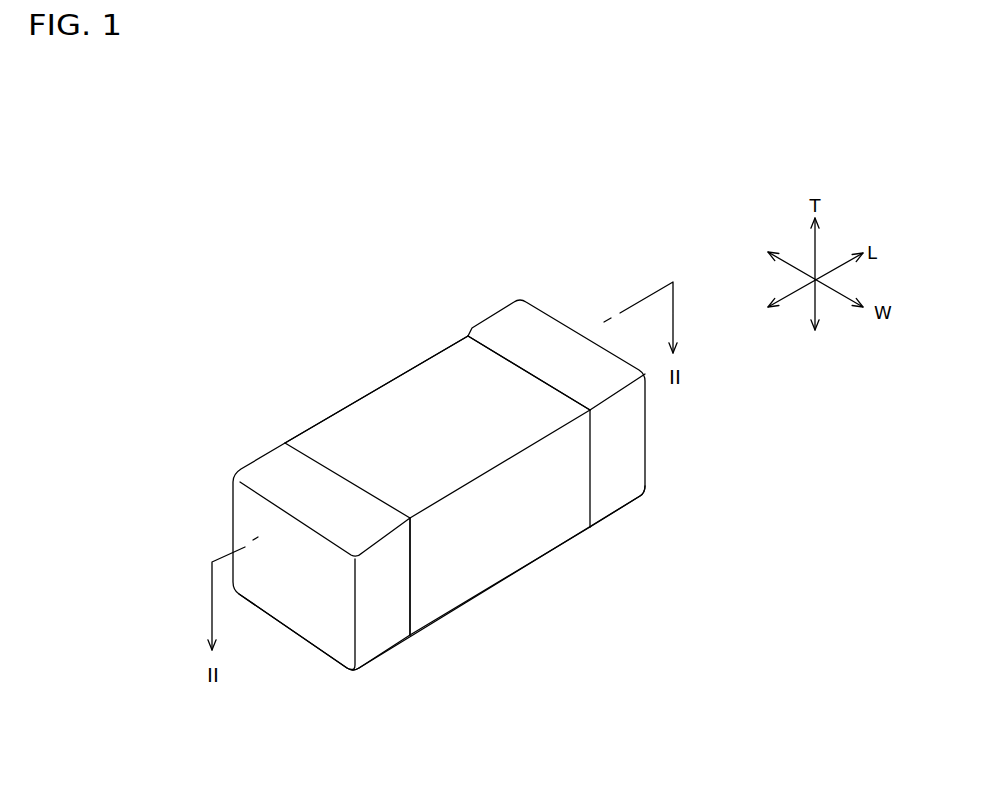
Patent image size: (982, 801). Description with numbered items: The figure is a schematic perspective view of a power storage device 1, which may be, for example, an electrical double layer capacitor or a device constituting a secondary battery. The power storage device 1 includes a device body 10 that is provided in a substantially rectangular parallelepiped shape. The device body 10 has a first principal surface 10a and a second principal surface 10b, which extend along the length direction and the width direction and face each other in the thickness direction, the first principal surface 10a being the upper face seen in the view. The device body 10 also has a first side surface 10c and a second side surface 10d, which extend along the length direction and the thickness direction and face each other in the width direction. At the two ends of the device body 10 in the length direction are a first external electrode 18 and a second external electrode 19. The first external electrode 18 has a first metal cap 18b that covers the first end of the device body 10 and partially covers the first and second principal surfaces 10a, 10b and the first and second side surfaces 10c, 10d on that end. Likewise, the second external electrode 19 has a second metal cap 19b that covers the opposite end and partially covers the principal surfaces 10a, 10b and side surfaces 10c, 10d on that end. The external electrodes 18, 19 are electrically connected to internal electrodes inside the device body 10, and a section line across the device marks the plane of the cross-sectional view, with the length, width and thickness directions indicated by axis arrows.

The power storage device 1 is at (449, 473).
The device body 10 is at (437, 479).
The first principal surface 10a is at (417, 397).
The second principal surface 10b is at (482, 592).
The first side surface 10c is at (452, 348).
The second side surface 10d is at (440, 598).
The first external electrode 18 is at (272, 598).
The first metal cap 18b is at (310, 637).
The second external electrode 19 is at (616, 448).
The second metal cap 19b is at (647, 490).